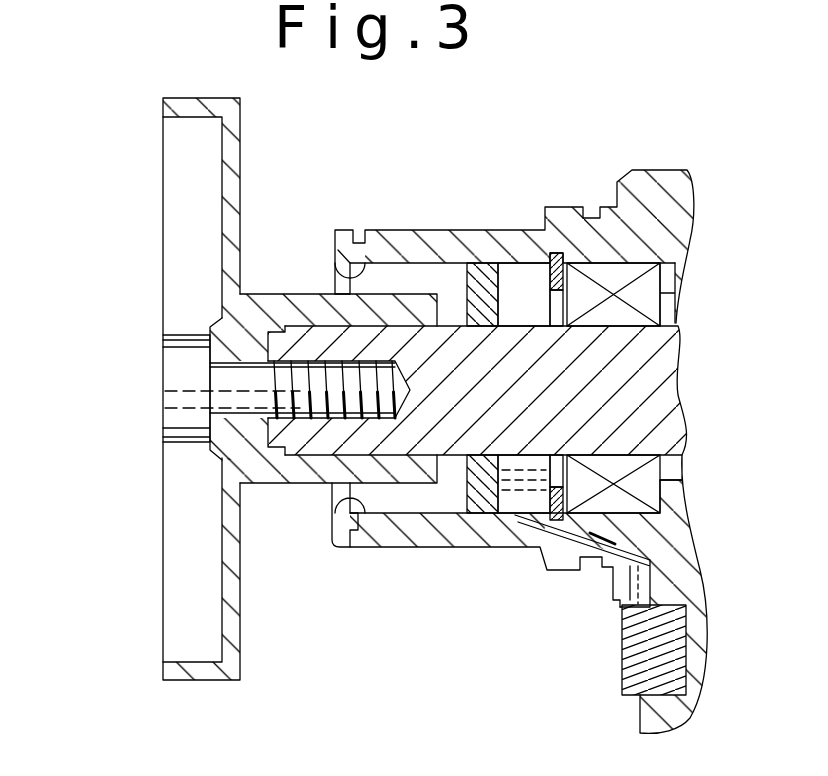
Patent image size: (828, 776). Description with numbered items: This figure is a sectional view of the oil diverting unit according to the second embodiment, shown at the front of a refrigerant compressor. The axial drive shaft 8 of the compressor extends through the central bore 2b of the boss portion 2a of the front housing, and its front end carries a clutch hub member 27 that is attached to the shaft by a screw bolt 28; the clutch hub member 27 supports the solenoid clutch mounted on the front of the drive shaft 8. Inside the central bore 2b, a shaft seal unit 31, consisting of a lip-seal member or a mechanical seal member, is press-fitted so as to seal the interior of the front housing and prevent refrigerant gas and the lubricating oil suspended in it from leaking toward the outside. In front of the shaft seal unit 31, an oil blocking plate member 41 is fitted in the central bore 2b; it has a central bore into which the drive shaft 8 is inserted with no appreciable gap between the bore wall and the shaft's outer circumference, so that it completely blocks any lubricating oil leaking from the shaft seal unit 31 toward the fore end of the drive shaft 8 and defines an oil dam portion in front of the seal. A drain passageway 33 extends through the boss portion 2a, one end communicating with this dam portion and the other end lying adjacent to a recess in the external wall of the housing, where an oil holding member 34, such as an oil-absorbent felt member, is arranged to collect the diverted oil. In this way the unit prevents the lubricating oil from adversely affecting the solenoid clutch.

The boss portion 2a is at (552, 242).
The central bore 2b is at (335, 270).
The drive shaft 8 is at (277, 428).
The clutch hub member 27 is at (237, 308).
The screw bolt 28 is at (178, 384).
The shaft seal unit 31 is at (632, 273).
The drain passageway 33 is at (573, 545).
The oil holding member 34 is at (622, 673).
The oil blocking plate member 41 is at (483, 494).